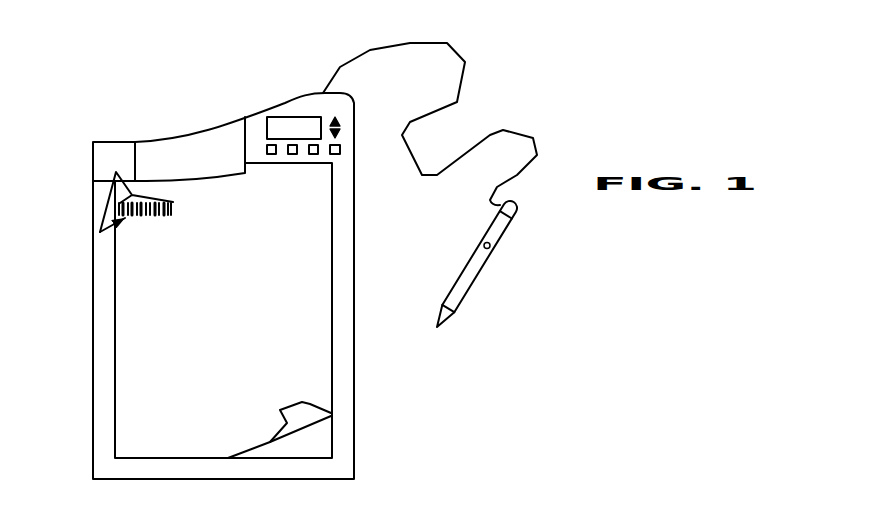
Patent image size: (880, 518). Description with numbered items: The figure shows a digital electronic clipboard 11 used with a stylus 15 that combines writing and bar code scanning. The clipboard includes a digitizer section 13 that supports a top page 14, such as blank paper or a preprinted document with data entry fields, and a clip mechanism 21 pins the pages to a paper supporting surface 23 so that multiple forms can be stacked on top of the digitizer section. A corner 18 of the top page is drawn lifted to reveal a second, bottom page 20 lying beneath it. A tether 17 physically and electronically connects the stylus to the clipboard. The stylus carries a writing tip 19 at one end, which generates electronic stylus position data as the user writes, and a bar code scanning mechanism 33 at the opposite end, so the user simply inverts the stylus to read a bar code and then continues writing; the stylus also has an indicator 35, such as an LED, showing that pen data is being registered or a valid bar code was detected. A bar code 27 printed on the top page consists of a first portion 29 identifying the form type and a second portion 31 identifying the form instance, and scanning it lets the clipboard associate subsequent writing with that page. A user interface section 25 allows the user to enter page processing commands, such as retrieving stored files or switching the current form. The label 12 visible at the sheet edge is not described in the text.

The digital electronic clipboard 11 is at (92, 362).
The digitizer section 13 is at (355, 333).
The top page 14 is at (308, 377).
The stylus 15 is at (477, 278).
The tether 17 is at (492, 133).
The corner of the top page 18 is at (278, 408).
The writing tip 19 is at (448, 313).
The bottom page 20 is at (317, 443).
The clip mechanism 21 is at (188, 172).
The paper supporting surface 23 is at (73, 430).
The user interface section 25 is at (293, 107).
The bar code 27 is at (116, 172).
The first portion of bar code 29 is at (100, 232).
The second portion of bar code 31 is at (101, 244).
The bar code scanning mechanism 33 is at (517, 210).
The indicator 35 is at (490, 247).
The sheet 12 is at (335, 514).